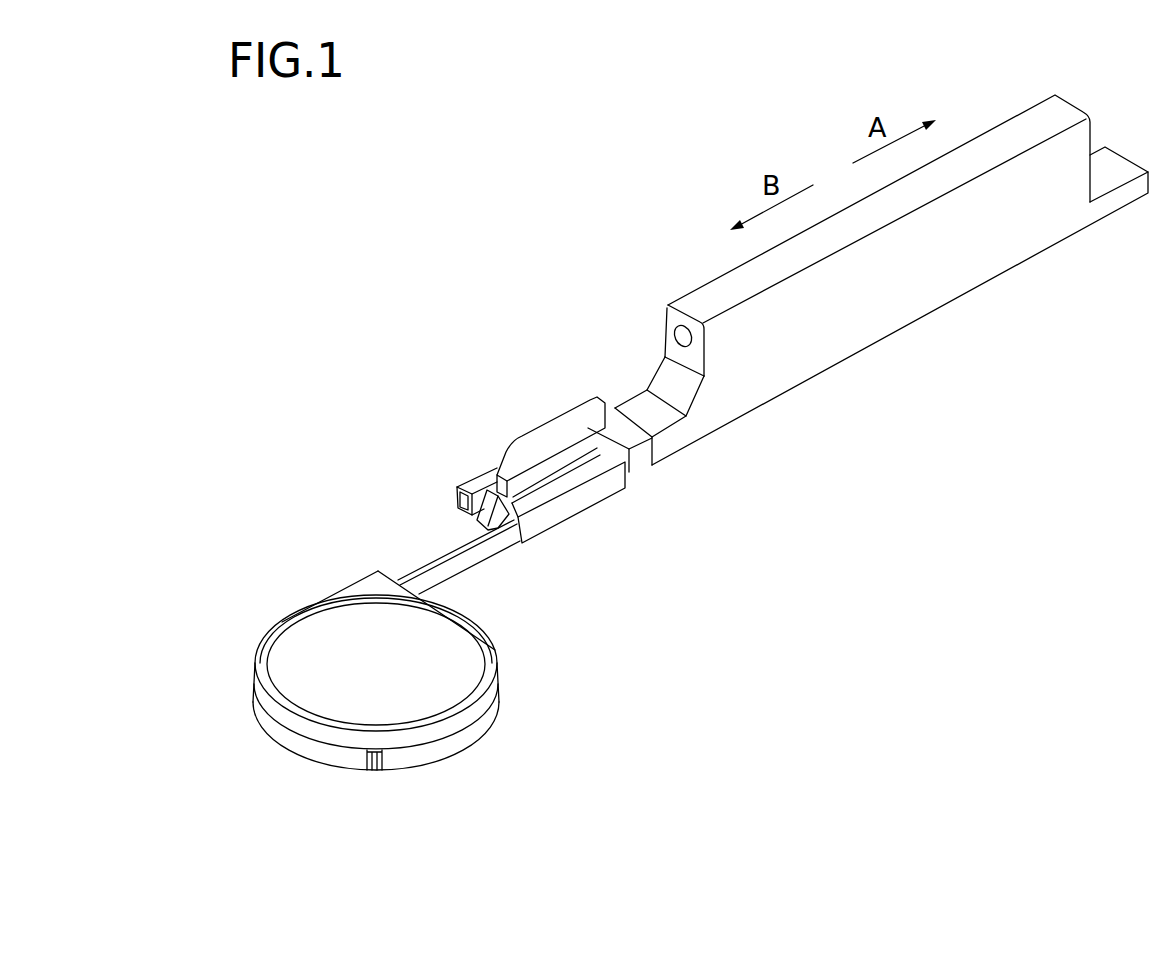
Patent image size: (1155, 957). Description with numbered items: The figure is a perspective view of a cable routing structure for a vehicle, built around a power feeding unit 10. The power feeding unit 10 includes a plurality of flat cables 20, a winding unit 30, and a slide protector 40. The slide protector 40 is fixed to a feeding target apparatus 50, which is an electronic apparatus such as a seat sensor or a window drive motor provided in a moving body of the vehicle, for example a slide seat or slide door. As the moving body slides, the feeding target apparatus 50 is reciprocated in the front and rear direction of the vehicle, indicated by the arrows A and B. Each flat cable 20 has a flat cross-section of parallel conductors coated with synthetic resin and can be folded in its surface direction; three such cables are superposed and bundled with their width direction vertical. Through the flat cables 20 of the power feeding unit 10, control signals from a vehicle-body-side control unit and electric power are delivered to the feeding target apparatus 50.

The power feeding unit 10 is at (483, 318).
The flat cable 20 is at (424, 552).
The winding unit 30 is at (322, 774).
The slide protector 40 is at (574, 529).
The feeding target apparatus 50 is at (842, 367).